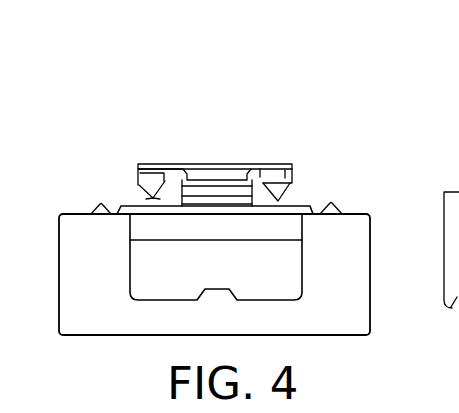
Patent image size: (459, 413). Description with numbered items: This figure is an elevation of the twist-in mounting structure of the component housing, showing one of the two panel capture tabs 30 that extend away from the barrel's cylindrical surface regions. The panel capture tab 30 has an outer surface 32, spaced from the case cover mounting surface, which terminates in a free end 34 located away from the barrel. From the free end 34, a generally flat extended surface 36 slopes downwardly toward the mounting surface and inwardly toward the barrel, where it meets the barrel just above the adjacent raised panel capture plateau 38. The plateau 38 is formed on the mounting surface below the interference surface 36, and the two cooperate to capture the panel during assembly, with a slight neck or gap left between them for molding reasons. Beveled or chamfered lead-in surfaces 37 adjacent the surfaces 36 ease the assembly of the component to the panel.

The panel capture tab 30 is at (289, 155).
The outer surface 32 is at (160, 165).
The free end 34 is at (139, 176).
The extended surface 36 is at (148, 202).
The lead-in surfaces 37 is at (270, 183).
The panel capture plateau 38 is at (302, 206).